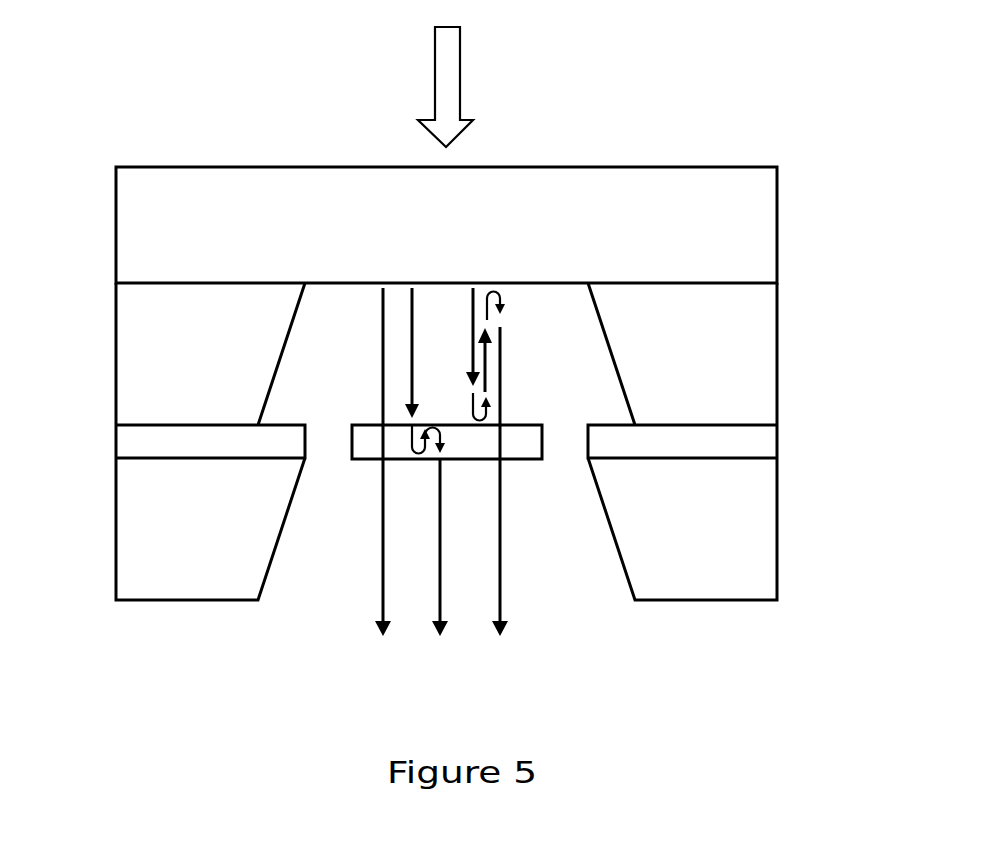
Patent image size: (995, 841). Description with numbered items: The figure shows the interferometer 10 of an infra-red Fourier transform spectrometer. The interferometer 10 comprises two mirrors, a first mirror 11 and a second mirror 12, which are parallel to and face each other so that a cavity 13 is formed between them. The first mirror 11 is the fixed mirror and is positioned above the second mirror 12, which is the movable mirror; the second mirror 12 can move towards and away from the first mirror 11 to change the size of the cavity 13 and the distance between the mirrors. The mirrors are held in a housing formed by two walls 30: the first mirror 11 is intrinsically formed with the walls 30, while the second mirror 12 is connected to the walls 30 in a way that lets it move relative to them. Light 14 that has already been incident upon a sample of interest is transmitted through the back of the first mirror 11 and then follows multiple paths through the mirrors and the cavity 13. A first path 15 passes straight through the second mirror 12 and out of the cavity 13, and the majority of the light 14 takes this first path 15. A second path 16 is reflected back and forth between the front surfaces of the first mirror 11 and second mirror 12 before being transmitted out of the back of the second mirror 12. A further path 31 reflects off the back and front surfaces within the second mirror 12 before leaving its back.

The interferometer 10 is at (446, 183).
The first mirror 11 is at (643, 117).
The second mirror 12 is at (522, 443).
The cavity 13 is at (555, 355).
The light 14 is at (472, 75).
The first path 15 is at (375, 598).
The second path 16 is at (507, 600).
The walls 30 is at (168, 355).
The further path 31 is at (450, 615).